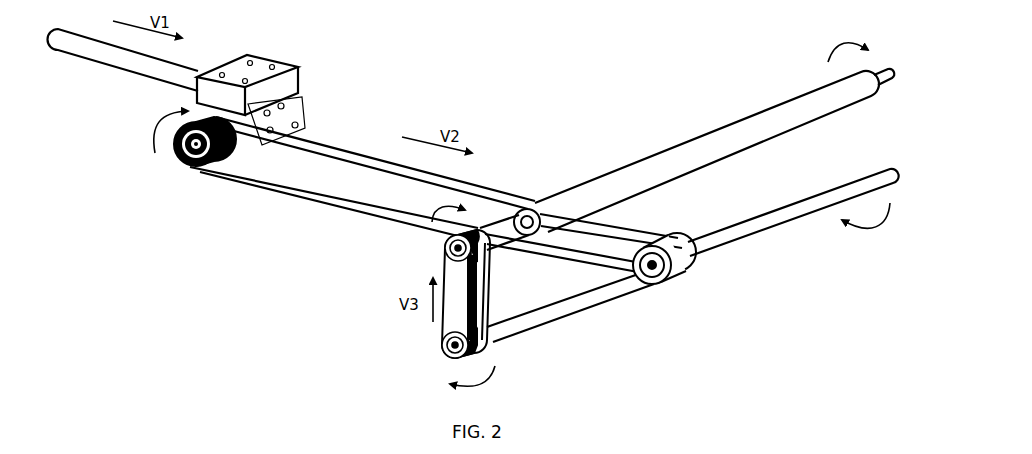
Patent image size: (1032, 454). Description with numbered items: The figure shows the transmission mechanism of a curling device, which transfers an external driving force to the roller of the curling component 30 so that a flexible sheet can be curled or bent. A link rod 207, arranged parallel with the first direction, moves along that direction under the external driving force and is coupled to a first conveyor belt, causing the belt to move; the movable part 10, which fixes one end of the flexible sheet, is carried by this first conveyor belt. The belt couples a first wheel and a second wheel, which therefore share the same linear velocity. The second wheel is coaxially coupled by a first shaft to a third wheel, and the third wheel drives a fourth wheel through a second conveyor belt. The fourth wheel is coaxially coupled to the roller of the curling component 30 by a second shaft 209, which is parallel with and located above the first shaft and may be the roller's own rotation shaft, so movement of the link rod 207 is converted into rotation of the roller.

The movable part 10 is at (262, 58).
The link rod 207 is at (130, 56).
The second shaft 209 is at (502, 250).
The curling component 30 is at (760, 134).